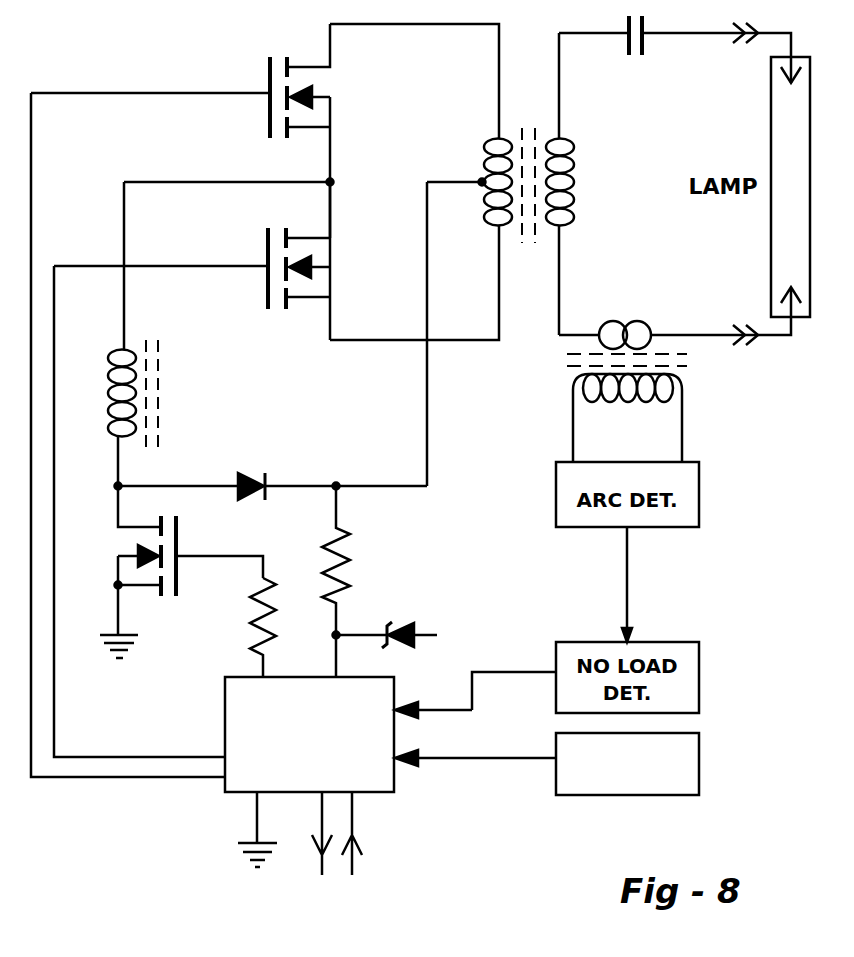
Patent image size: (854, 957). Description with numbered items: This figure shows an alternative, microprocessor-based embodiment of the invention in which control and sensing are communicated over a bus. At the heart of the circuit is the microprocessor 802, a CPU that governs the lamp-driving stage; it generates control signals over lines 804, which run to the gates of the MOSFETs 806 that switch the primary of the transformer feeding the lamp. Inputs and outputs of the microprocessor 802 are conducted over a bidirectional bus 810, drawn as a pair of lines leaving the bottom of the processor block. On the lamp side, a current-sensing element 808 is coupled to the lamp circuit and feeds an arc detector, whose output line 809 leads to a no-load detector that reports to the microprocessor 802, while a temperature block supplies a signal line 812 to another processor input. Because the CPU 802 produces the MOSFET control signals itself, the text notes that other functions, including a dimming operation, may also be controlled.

The microprocessor 802 is at (309, 734).
The lines 804 is at (128, 435).
The MOSFETs 806 is at (231, 66).
The current sensing transformer 808 is at (726, 402).
The arc detection signal line 809 is at (649, 584).
The bidirectional bus 810 is at (337, 851).
The temperature signal line 812 is at (547, 764).